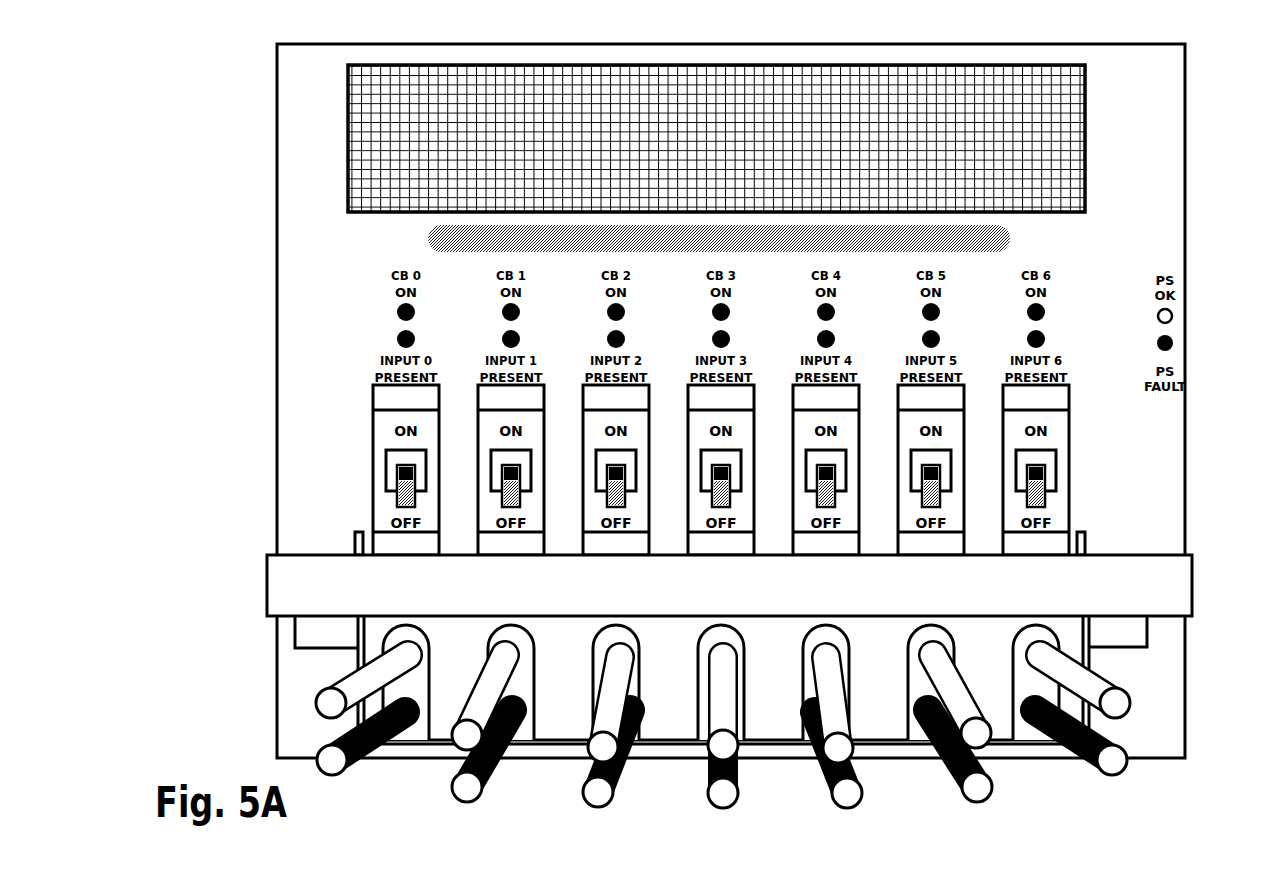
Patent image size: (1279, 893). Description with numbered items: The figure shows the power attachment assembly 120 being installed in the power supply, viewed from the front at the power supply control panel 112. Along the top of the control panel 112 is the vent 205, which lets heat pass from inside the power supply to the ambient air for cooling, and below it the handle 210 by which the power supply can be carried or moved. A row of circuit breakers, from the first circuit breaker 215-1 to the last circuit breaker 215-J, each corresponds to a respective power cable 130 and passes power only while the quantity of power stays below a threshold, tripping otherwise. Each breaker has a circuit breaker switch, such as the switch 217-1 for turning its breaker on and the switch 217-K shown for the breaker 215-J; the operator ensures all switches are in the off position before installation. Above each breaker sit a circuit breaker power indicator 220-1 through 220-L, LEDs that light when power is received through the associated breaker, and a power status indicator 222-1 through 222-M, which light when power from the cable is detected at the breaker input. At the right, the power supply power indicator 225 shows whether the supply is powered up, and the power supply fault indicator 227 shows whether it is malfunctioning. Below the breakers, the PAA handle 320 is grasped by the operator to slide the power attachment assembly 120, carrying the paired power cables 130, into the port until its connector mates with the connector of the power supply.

The power supply control panel 112 is at (277, 186).
The vent 205 is at (1038, 117).
The handle 210 is at (428, 237).
The circuit breaker power indicator 220-1 is at (397, 312).
The power status indicator 222-1 is at (397, 339).
The circuit breaker power indicator 220-L is at (1047, 311).
The power status indicator 222-M is at (1047, 338).
The power supply power indicator 225 is at (1175, 316).
The power supply fault indicator 227 is at (1176, 341).
The circuit breaker 215-1 is at (365, 470).
The circuit breaker switch 217-1 is at (396, 490).
The circuit breaker 215-J is at (1079, 470).
The circuit breaker switch 217-K is at (1050, 505).
The PAA handle 320 is at (1152, 578).
The power cables 130 is at (380, 716).
The power attachment assembly 120 is at (672, 695).